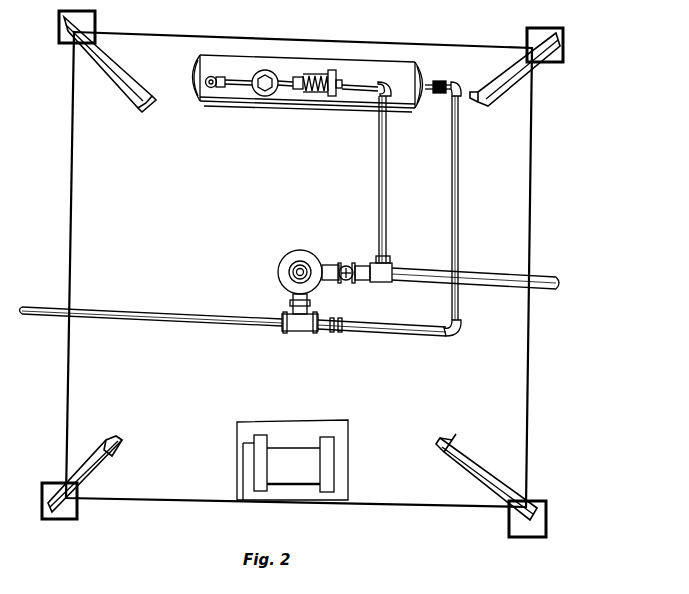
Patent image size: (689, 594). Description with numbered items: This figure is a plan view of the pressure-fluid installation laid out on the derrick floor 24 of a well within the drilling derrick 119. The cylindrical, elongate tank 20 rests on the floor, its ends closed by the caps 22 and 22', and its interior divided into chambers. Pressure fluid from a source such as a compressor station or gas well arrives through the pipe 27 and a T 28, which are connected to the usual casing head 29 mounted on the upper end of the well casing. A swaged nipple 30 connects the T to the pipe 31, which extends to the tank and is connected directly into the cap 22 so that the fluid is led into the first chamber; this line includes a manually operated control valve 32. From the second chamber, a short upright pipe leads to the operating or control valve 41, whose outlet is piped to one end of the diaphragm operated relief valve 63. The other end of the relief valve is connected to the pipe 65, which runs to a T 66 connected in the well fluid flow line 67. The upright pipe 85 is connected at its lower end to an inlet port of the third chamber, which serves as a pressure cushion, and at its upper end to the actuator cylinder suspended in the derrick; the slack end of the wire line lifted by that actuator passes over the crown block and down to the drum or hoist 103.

The tank 20 is at (258, 63).
The cap 22 is at (429, 103).
The cap 22' is at (173, 74).
The derrick floor 24 is at (106, 181).
The pipe 27 is at (150, 312).
The T 28 is at (297, 332).
The casing head 29 is at (279, 267).
The swaged nipple 30 is at (325, 319).
The pipe 31 is at (459, 184).
The control valve 32 is at (440, 81).
The operating or control valve 41 is at (268, 96).
The relief valve 63 is at (332, 96).
The pipe 65 is at (370, 86).
The T 66 is at (390, 264).
The well fluid flow line 67 is at (306, 265).
The upright pipe 85 is at (213, 88).
The drum or hoist 103 is at (285, 447).
The drilling derrick 119 is at (120, 92).